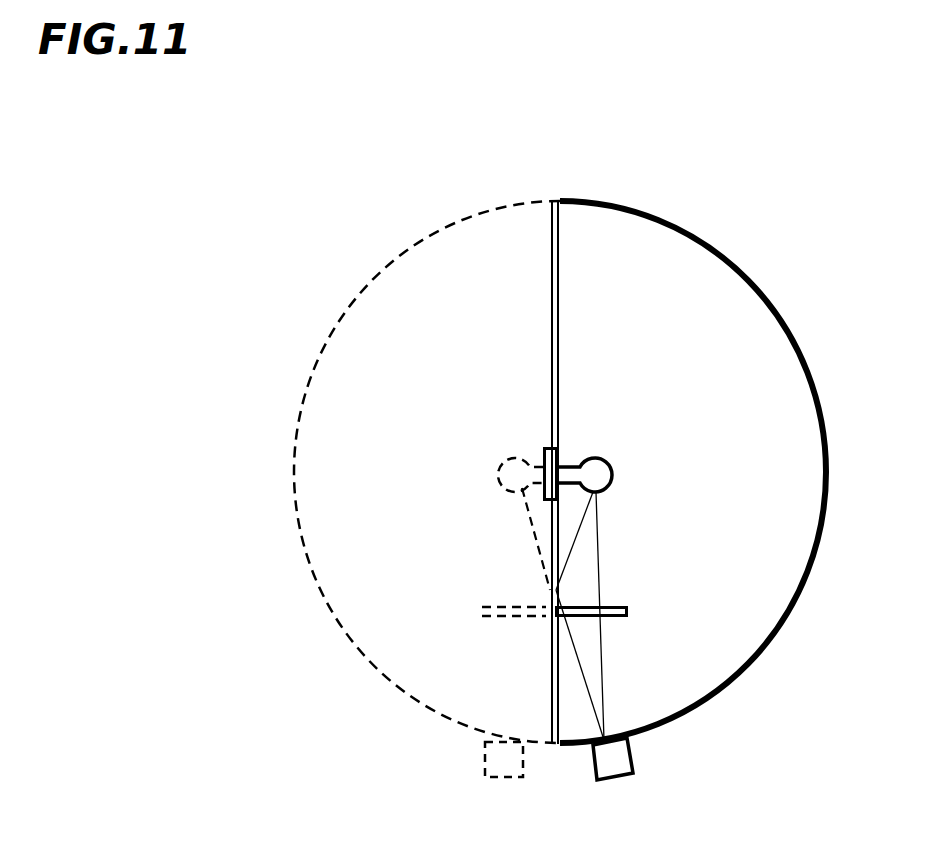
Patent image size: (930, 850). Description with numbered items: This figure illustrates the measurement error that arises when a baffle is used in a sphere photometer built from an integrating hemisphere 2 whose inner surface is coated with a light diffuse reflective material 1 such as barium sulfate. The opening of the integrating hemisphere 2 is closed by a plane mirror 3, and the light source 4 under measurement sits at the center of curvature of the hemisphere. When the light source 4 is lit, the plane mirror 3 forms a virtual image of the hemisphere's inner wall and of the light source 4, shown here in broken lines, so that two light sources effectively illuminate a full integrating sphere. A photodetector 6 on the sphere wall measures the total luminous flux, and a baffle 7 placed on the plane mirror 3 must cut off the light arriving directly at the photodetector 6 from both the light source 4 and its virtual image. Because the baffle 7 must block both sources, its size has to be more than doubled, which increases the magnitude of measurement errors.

The light diffuse reflective material 1 is at (572, 472).
The integrating hemisphere 2 is at (625, 215).
The plane mirror 3 is at (547, 375).
The light source under measurement 4 is at (591, 455).
The photodetector 6 is at (633, 773).
The baffle 7 is at (628, 612).